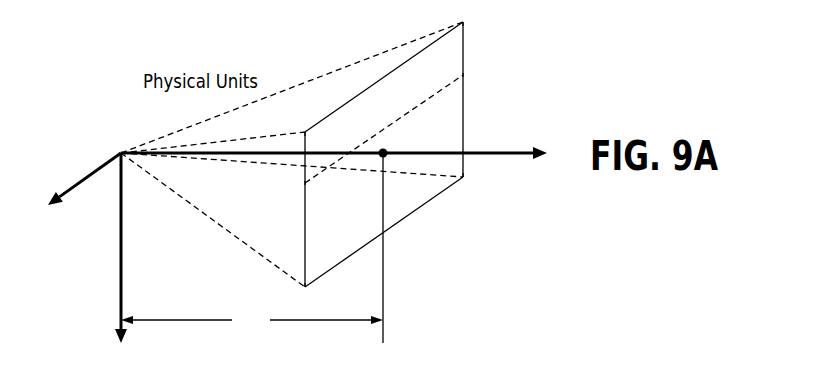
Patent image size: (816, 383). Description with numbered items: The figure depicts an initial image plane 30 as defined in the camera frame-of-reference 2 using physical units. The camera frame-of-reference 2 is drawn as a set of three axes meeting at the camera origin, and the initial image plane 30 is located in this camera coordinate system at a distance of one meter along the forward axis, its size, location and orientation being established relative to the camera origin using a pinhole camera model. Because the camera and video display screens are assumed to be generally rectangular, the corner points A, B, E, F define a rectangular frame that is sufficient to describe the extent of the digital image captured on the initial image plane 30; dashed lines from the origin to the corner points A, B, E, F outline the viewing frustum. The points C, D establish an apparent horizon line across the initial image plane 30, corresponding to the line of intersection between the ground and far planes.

The camera frame-of-reference 2 is at (297, 194).
The initial image plane 30 is at (463, 116).
The corner point A is at (473, 183).
The corner point B is at (306, 298).
The horizon line point C is at (474, 73).
The horizon line point D is at (296, 185).
The corner point E is at (473, 25).
The corner point F is at (296, 123).